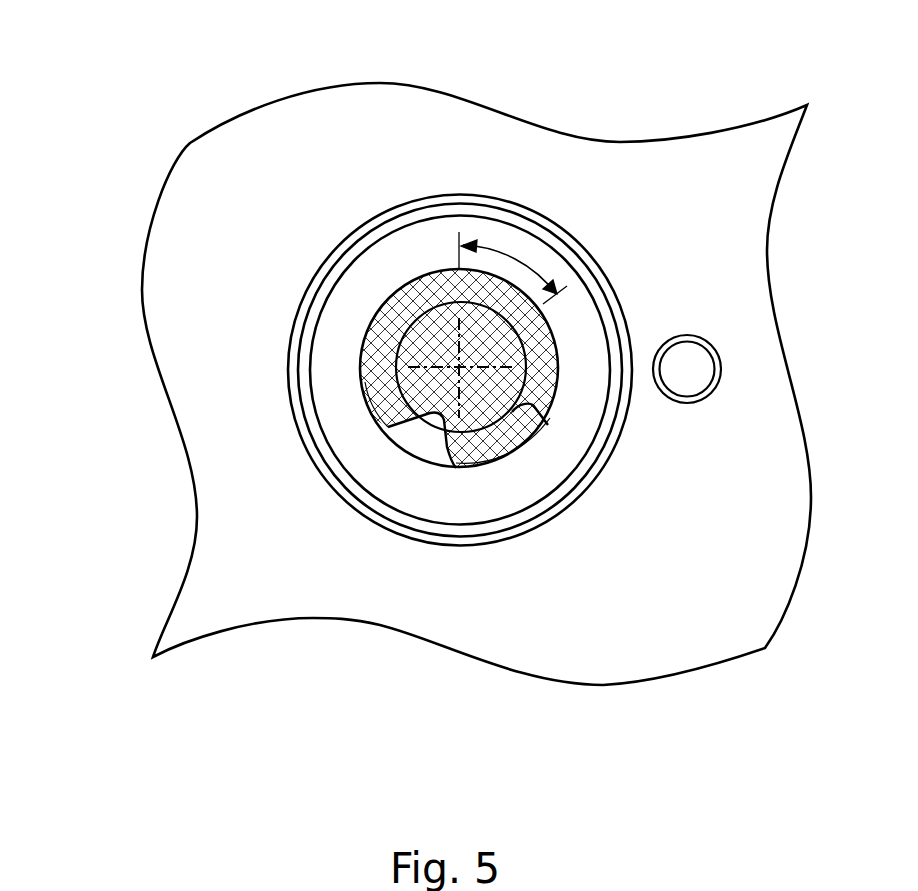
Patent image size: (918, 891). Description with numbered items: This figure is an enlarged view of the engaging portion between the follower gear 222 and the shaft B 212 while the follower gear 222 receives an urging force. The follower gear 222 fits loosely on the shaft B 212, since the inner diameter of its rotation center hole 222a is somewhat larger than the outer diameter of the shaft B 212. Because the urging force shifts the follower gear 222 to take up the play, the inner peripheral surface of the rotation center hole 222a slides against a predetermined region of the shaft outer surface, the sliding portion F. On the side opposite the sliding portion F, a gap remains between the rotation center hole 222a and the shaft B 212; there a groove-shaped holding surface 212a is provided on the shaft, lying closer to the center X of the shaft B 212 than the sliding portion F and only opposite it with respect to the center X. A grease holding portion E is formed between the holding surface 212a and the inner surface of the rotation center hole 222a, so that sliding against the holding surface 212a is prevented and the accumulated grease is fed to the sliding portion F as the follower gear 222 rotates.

The follower gear 222 is at (270, 135).
The rotation center hole 222a is at (432, 273).
The shaft B 212 is at (383, 357).
The holding surface 212a is at (447, 433).
The grease holding portion E is at (404, 438).
The sliding portion F is at (517, 260).
The center X is at (461, 369).